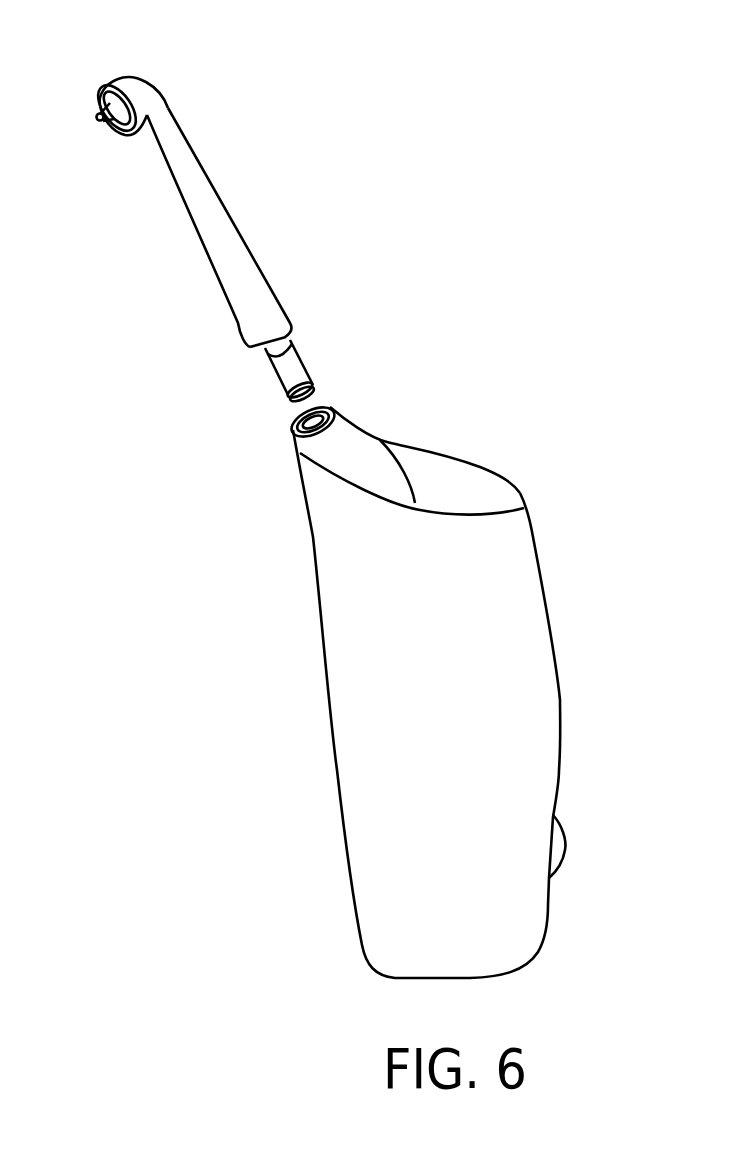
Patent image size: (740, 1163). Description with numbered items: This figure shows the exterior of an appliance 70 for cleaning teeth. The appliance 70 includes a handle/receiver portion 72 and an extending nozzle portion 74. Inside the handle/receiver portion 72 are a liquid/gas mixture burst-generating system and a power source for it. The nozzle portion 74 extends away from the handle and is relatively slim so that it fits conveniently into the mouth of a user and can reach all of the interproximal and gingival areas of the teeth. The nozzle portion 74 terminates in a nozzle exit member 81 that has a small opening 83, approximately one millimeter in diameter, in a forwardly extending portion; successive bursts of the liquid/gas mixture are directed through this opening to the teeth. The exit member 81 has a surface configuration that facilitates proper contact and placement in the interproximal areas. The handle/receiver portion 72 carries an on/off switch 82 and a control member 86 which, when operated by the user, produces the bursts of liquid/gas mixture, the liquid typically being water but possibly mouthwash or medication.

The appliance 70 is at (345, 493).
The handle/receiver portion 72 is at (357, 665).
The nozzle portion 74 is at (228, 217).
The nozzle exit member 81 is at (128, 77).
The on/off switch 82 is at (565, 847).
The small opening 83 is at (97, 121).
The control member 86 is at (467, 476).